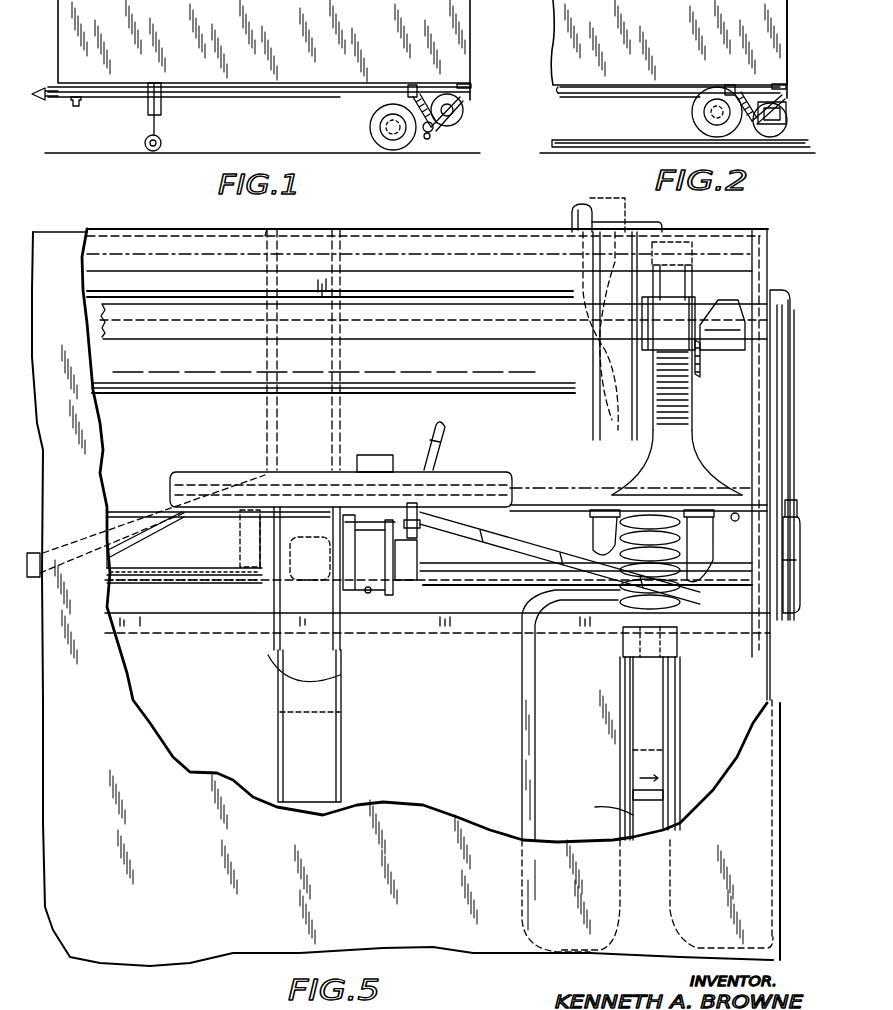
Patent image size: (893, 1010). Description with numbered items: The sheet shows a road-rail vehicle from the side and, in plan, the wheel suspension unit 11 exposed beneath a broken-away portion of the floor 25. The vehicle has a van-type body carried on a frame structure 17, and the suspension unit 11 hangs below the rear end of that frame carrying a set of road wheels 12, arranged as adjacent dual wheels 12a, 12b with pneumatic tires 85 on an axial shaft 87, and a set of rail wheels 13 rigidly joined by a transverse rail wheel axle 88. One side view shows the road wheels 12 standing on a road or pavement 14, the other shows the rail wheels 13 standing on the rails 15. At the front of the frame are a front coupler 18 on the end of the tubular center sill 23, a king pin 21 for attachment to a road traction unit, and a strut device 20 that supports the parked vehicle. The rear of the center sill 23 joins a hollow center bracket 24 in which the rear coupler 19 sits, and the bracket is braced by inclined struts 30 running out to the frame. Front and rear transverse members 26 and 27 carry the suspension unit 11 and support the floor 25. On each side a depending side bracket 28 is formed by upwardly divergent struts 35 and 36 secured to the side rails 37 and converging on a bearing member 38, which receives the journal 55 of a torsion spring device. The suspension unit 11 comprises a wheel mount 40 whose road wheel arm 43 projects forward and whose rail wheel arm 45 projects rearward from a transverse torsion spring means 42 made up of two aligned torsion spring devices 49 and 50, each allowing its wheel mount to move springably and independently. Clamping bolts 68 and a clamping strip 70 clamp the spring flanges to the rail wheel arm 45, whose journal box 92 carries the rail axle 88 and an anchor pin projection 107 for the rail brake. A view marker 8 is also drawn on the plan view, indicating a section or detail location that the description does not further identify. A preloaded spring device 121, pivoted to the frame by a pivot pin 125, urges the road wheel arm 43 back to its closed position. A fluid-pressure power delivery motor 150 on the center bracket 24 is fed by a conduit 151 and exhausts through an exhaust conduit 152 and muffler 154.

In FIG. 5, the threaded shaft / screw 8 is at (703, 401).
In FIG. 1, the wheel suspension unit 11 is at (432, 137).
In FIG. 1, the road wheels 12 is at (371, 125).
In FIG. 2, the road wheels 12 is at (697, 115).
In FIG. 5, the road wheels 12 is at (521, 755).
In FIG. 5, the dual wheel 12a is at (776, 692).
In FIG. 5, the dual wheel 12b is at (540, 790).
In FIG. 1, the rail wheels 13 is at (465, 107).
In FIG. 2, the rail wheels 13 is at (787, 126).
In FIG. 5, the rail wheels 13 is at (612, 222).
In FIG. 1, the road or pavement 14 is at (203, 151).
In FIG. 2, the rails 15 is at (593, 132).
In FIG. 5, the rails 15 is at (590, 200).
In FIG. 1, the frame structure 17 is at (277, 95).
In FIG. 5, the frame structure 17 is at (775, 273).
In FIG. 1, the front coupler 18 is at (36, 102).
In FIG. 1, the rear coupler 19 is at (468, 84).
In FIG. 2, the rear coupler 19 is at (788, 88).
In FIG. 5, the rear coupler 19 is at (266, 244).
In FIG. 1, the strut device 20 is at (148, 108).
In FIG. 1, the king pin 21 is at (78, 108).
In FIG. 1, the center sill 23 is at (186, 100).
In FIG. 2, the center sill 23 is at (612, 97).
In FIG. 5, the center sill 23 is at (285, 655).
In FIG. 1, the center bracket 24 is at (429, 94).
In FIG. 2, the center bracket 24 is at (760, 86).
In FIG. 5, the center bracket 24 is at (276, 415).
In FIG. 1, the floor 25 is at (257, 83).
In FIG. 2, the floor 25 is at (637, 87).
In FIG. 5, the floor 25 is at (158, 957).
In FIG. 1, the front transverse member 26 is at (406, 88).
In FIG. 2, the front transverse member 26 is at (730, 86).
In FIG. 5, the front transverse member 26 is at (495, 632).
In FIG. 1, the rear transverse member 27 is at (466, 96).
In FIG. 2, the rear transverse member 27 is at (787, 94).
In FIG. 5, the rear transverse member 27 is at (438, 238).
In FIG. 5, the side bracket 28 is at (784, 430).
In FIG. 5, the inclined struts 30 is at (460, 522).
In FIG. 5, the strut 35 is at (789, 580).
In FIG. 5, the strut 36 is at (783, 360).
In FIG. 5, the side rails 37 is at (780, 400).
In FIG. 5, the bearing member 38 is at (784, 520).
In FIG. 5, the wheel mount 40 is at (700, 462).
In FIG. 5, the torsion spring means 42 is at (430, 586).
In FIG. 5, the road wheel arm 43 is at (706, 538).
In FIG. 5, the rail wheel arm 45 is at (690, 437).
In FIG. 5, the torsion spring device 49 is at (480, 586).
In FIG. 5, the torsion spring device 50 is at (158, 590).
In FIG. 5, the journal 55 is at (789, 545).
In FIG. 5, the clamping bolts 68 is at (532, 545).
In FIG. 5, the clamping strip 70 is at (702, 488).
In FIG. 5, the pneumatic tires 85 is at (697, 789).
In FIG. 5, the axial shaft 87 is at (668, 778).
In FIG. 5, the rail wheel axle 88 is at (467, 395).
In FIG. 5, the journal box 92 is at (712, 360).
In FIG. 5, the anchor pin projection 107 is at (722, 340).
In FIG. 5, the spring device 121 is at (628, 538).
In FIG. 5, the pivot pin 125 is at (678, 652).
In FIG. 5, the power delivery motor 150 is at (372, 592).
In FIG. 5, the conduit 151 is at (442, 452).
In FIG. 5, the exhaust conduit 152 is at (343, 521).
In FIG. 5, the muffler 154 is at (379, 462).